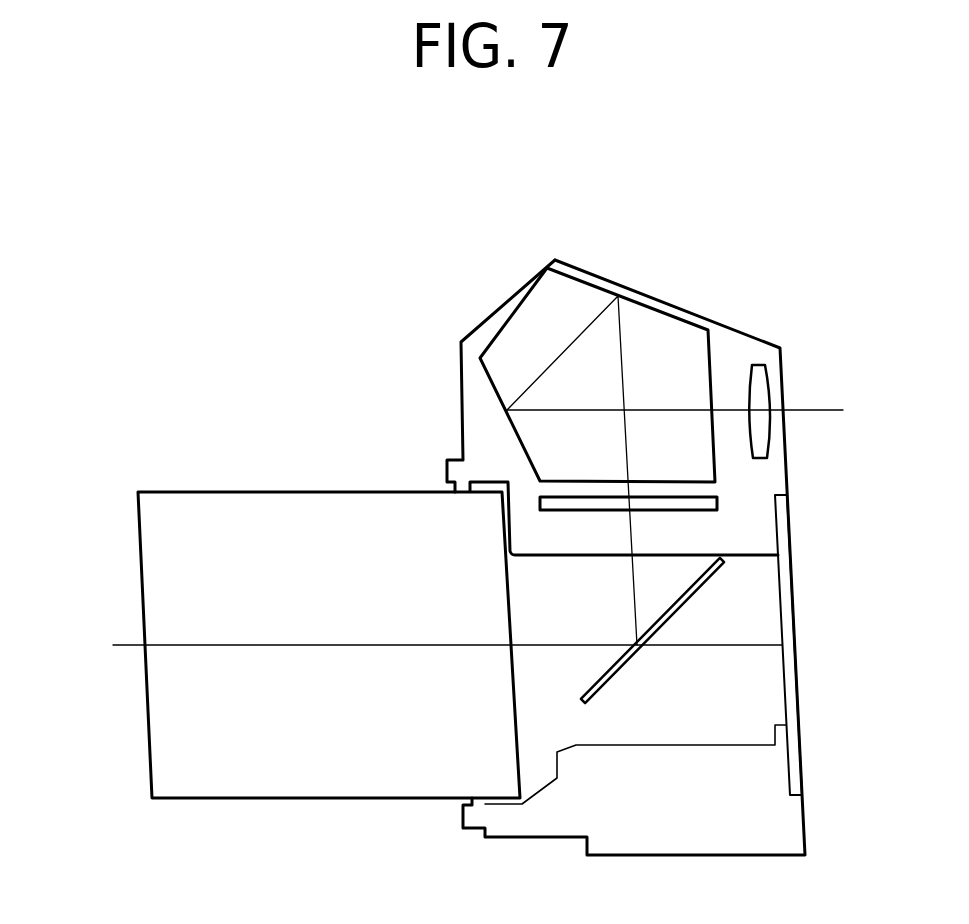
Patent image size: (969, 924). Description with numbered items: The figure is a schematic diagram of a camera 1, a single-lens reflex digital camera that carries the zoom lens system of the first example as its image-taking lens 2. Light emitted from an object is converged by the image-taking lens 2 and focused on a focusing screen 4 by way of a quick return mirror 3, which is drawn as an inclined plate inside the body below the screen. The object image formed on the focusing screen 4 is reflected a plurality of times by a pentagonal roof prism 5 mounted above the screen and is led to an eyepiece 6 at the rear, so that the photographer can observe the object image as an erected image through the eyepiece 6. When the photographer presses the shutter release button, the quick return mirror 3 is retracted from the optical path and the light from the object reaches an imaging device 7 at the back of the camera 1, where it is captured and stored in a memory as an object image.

The camera 1 is at (142, 272).
The image-taking lens 2 is at (190, 515).
The quick return mirror 3 is at (612, 673).
The focusing screen 4 is at (702, 503).
The pentagonal roof prism 5 is at (568, 302).
The eyepiece 6 is at (757, 387).
The imaging device 7 is at (788, 673).